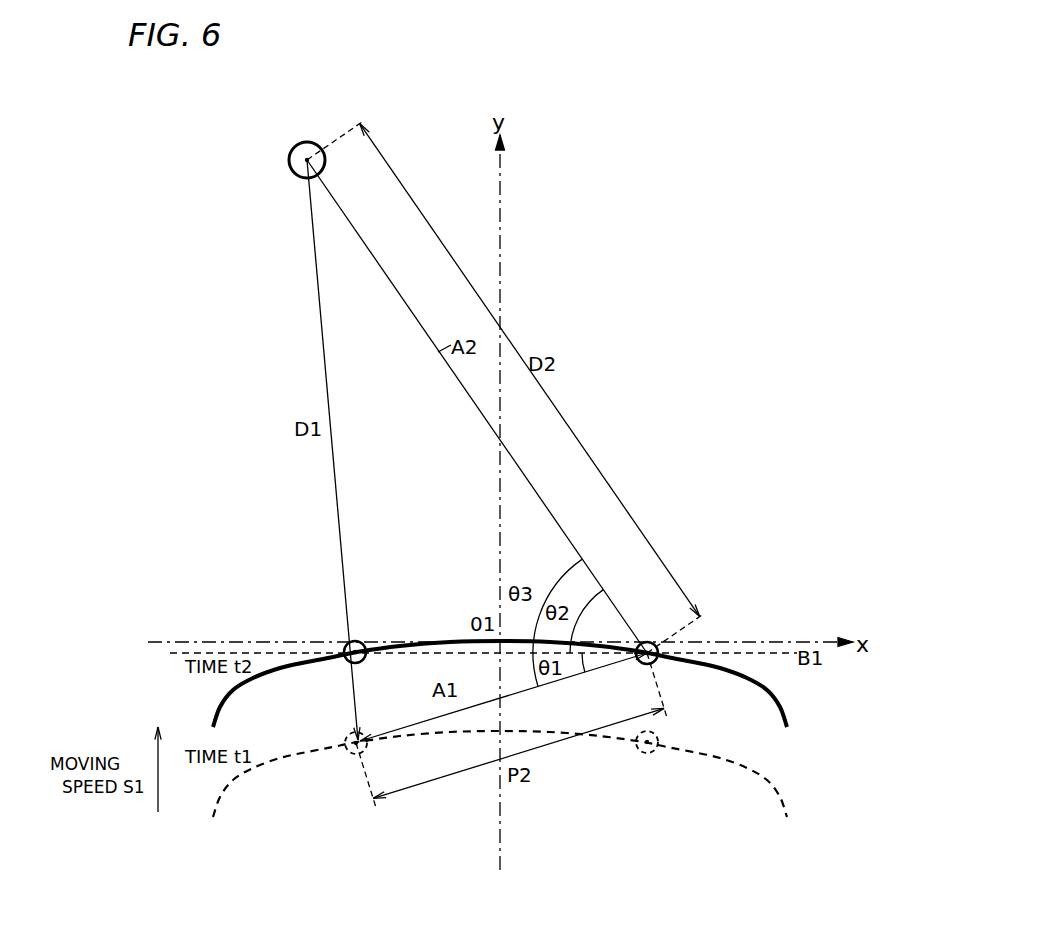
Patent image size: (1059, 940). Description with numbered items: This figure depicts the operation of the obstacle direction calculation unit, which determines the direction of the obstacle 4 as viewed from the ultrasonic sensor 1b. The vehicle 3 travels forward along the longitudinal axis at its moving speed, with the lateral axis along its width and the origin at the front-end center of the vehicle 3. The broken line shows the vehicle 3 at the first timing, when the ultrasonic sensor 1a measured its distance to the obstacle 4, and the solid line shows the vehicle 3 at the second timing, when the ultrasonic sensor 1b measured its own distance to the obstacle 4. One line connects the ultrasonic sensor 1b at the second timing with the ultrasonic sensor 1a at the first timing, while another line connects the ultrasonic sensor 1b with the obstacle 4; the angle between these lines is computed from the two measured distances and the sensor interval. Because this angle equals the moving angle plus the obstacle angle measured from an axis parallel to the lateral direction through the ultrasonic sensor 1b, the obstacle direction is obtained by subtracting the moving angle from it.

The obstacle 4 is at (313, 152).
The ultrasonic sensor 1a is at (361, 645).
The ultrasonic sensor 1b is at (647, 643).
The vehicle 3 is at (780, 698).